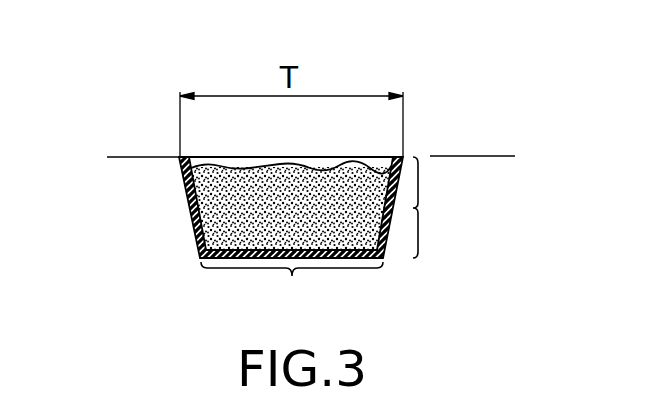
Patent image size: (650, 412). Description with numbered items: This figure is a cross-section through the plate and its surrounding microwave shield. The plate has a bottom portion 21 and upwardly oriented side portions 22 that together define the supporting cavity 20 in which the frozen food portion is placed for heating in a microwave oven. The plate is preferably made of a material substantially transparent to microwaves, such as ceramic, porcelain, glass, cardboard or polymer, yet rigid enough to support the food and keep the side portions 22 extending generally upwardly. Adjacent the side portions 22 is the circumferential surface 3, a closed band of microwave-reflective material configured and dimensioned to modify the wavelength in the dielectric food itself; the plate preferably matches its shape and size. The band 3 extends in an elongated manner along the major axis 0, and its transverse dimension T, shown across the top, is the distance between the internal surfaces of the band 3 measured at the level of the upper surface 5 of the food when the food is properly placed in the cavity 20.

The side portions 22 is at (183, 160).
The supporting cavity 20 is at (248, 215).
The upper surface of the food 5 is at (358, 170).
The major axis 0 is at (146, 157).
The bottom portion 21 is at (292, 288).
The circumferential surface 3 is at (430, 207).